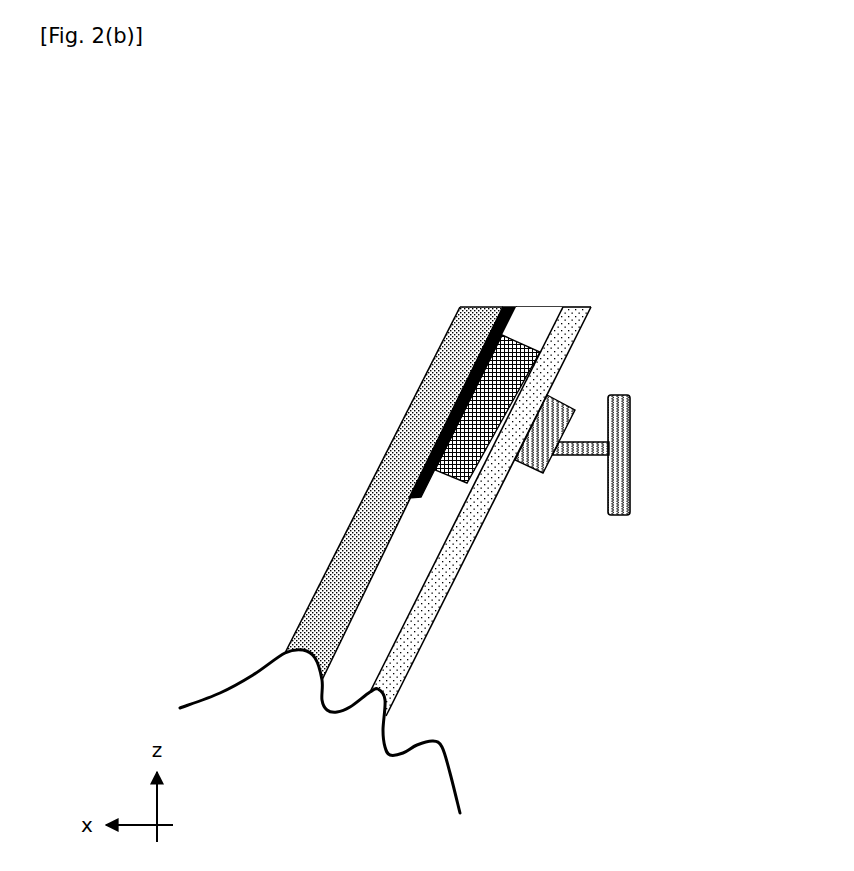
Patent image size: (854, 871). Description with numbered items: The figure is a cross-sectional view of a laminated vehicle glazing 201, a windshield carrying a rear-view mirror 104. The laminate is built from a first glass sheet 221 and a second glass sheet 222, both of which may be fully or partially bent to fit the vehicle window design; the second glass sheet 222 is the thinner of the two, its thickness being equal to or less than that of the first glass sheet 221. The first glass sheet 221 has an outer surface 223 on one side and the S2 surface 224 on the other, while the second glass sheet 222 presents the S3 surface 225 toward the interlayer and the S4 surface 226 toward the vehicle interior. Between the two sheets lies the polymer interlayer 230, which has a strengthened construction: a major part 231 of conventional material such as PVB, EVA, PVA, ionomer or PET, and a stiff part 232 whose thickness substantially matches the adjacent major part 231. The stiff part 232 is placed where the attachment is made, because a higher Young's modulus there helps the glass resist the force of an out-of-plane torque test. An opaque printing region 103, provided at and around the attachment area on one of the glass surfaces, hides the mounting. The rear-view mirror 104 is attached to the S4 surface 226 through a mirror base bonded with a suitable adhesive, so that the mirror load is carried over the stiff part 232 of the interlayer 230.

The laminated vehicle glazing 201 is at (432, 274).
The opaque printing region 103 is at (502, 307).
The first glass sheet 221 is at (331, 493).
The first surface of first substrate 223 is at (338, 548).
The S2 surface 224 is at (362, 600).
The polymer interlayer 230 is at (552, 292).
The major part 231 is at (537, 322).
The stiff part 232 is at (513, 375).
The second glass sheet 222 is at (498, 511).
The S3 surface 225 is at (415, 612).
The S4 surface 226 is at (417, 657).
The rear-view mirror 104 is at (629, 480).